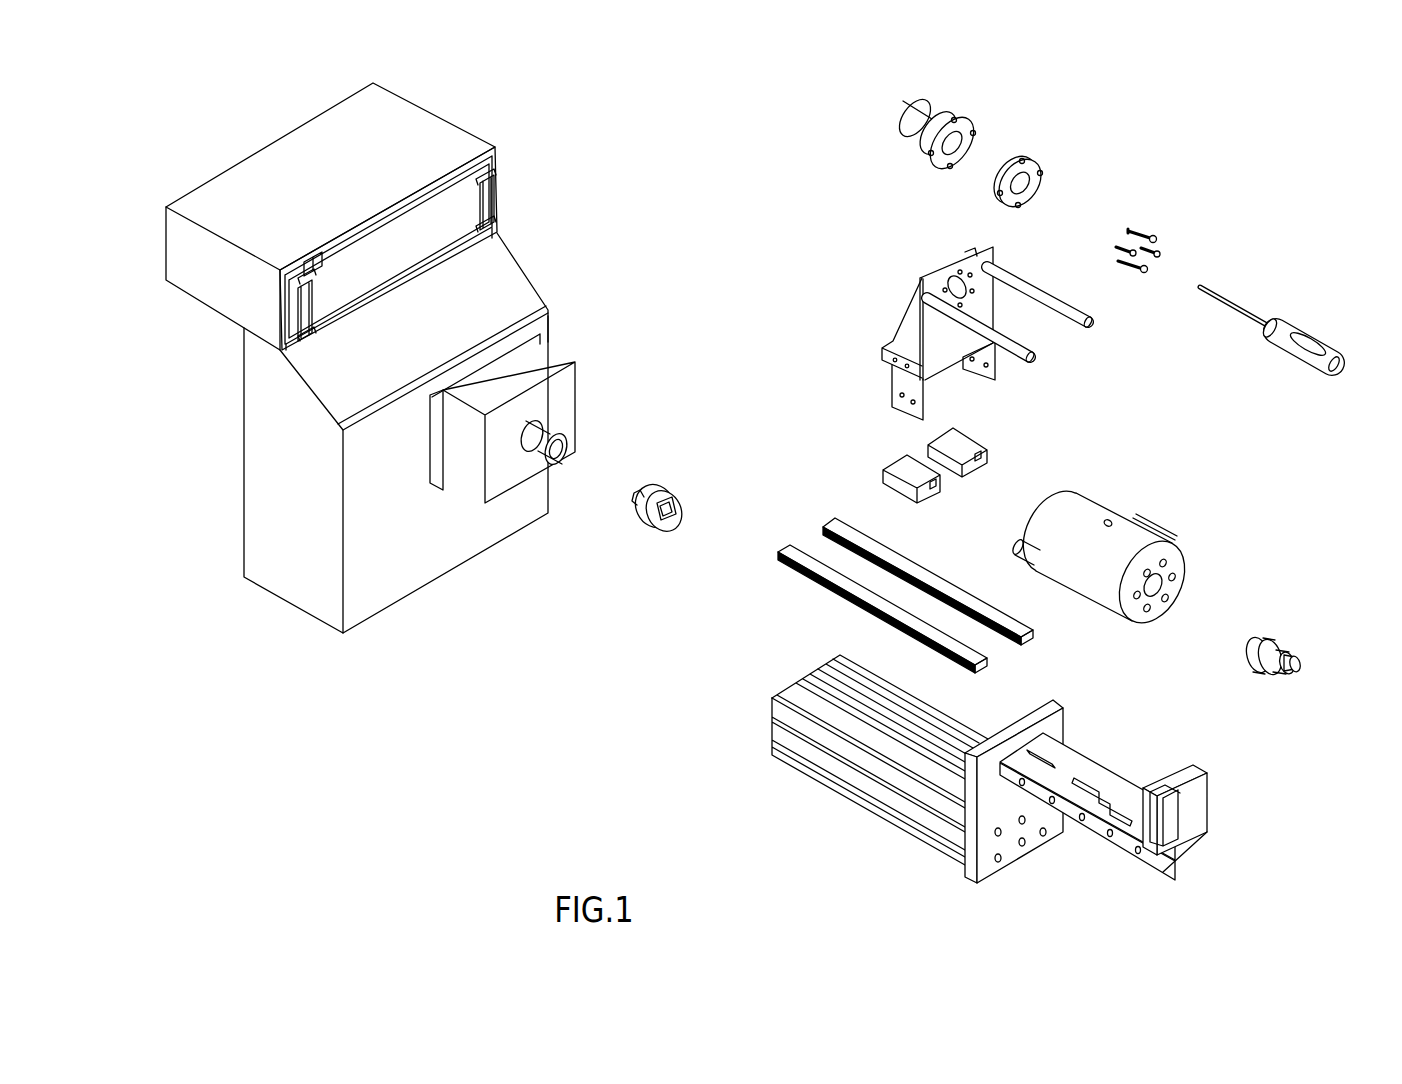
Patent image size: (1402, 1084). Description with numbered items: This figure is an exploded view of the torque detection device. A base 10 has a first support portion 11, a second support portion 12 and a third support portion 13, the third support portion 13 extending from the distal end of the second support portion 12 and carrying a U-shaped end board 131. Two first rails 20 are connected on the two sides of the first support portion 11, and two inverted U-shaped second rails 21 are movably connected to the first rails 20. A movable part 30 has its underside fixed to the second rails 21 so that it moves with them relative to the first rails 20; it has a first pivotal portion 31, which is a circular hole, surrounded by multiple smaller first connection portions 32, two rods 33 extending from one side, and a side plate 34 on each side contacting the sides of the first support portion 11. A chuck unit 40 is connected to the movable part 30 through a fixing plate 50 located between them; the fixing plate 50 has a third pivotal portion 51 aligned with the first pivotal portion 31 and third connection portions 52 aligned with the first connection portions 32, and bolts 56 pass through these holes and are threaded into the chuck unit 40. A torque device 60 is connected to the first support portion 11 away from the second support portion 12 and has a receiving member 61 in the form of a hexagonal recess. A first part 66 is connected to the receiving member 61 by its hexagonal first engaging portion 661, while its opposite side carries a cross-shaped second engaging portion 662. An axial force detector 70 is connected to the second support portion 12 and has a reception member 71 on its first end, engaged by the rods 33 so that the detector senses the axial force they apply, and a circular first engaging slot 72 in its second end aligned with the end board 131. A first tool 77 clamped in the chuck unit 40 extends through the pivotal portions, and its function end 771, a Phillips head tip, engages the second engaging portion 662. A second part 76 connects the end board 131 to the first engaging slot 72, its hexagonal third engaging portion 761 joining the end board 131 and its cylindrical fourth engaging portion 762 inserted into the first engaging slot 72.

The base 10 is at (901, 755).
The first support portion 11 is at (803, 683).
The second support portion 12 is at (1103, 777).
The third support portion 13 is at (1209, 810).
The end board 131 is at (1177, 810).
The first rails 20 is at (790, 563).
The second rails 21 is at (895, 468).
The movable part 30 is at (984, 310).
The first pivotal portion 31 is at (930, 290).
The first connection portions 32 is at (957, 270).
The rods 33 is at (1090, 323).
The side plates 34 is at (895, 378).
The chuck unit 40 is at (963, 120).
The fixing plate 50 is at (1045, 172).
The third pivotal portion 51 is at (1023, 187).
The third connection portions 52 is at (1040, 167).
The bolts 56 is at (1152, 233).
The torque device 60 is at (394, 358).
The receiving member 61 is at (553, 437).
The first part 66 is at (644, 493).
The first engaging portion 661 is at (635, 502).
The second engaging portion 662 is at (668, 513).
The axial force detector 70 is at (1103, 540).
The reception member 71 is at (1017, 547).
The first engaging slot 72 is at (1162, 583).
The second part 76 is at (1278, 643).
The third engaging portion 761 is at (1295, 668).
The fourth engaging portion 762 is at (1253, 658).
The first tool 77 is at (1278, 302).
The function end 771 is at (1203, 285).